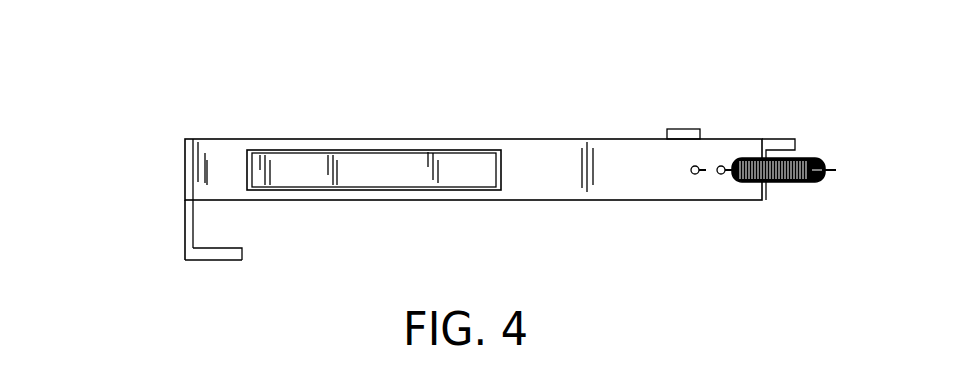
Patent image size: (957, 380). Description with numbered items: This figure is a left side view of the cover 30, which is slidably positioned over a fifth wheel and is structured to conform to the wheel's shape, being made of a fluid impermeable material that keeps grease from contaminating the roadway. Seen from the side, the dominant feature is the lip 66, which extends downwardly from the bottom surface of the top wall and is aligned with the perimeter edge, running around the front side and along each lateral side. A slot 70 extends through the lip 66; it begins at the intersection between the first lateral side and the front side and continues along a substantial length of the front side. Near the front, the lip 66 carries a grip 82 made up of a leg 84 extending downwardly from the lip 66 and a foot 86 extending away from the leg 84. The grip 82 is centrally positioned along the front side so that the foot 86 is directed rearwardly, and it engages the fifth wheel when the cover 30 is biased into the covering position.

The cover 30 is at (183, 138).
The slot 70 is at (350, 145).
The lip 66 is at (553, 167).
The leg 84 is at (185, 235).
The grip 82 is at (185, 260).
The foot 86 is at (217, 260).